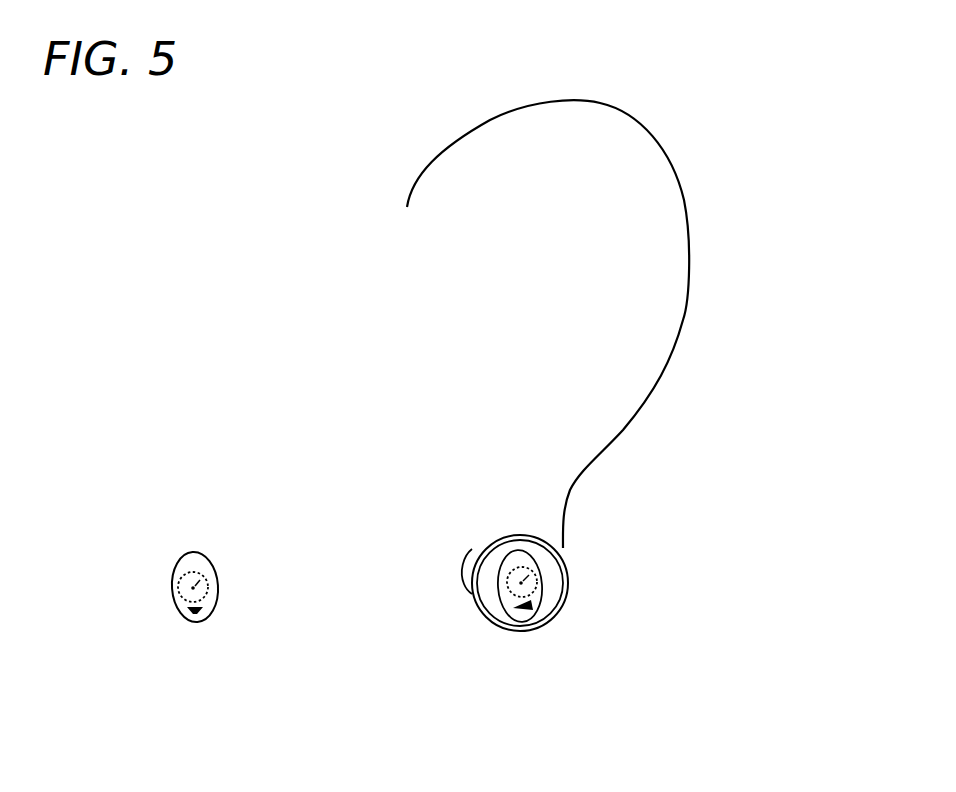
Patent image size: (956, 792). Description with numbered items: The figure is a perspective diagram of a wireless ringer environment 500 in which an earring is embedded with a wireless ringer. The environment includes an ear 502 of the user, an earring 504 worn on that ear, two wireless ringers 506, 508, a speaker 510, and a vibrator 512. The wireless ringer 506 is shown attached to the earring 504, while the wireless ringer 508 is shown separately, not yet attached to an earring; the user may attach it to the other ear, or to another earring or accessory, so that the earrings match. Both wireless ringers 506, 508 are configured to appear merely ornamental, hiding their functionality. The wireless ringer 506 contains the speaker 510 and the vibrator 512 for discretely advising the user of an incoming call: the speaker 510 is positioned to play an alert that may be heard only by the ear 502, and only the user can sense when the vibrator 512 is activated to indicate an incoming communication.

The wireless ringer environment 500 is at (347, 131).
The ear 502 is at (693, 209).
The earring 504 is at (465, 600).
The wireless ringer 506 is at (510, 561).
The wireless ringer 508 is at (203, 563).
The speaker 510 is at (530, 606).
The vibrator 512 is at (535, 577).